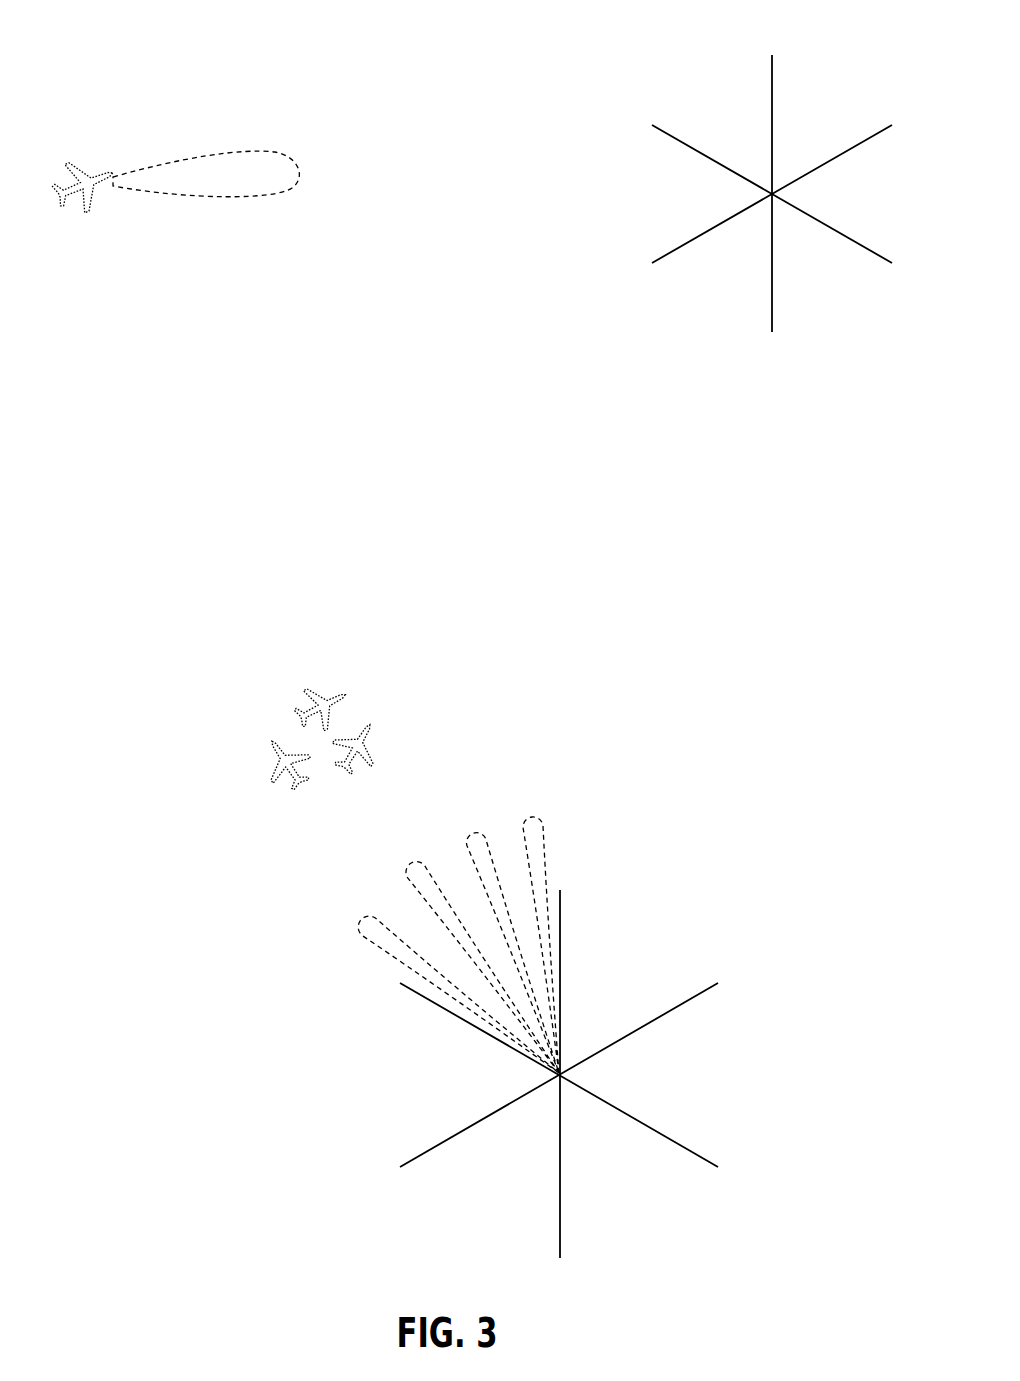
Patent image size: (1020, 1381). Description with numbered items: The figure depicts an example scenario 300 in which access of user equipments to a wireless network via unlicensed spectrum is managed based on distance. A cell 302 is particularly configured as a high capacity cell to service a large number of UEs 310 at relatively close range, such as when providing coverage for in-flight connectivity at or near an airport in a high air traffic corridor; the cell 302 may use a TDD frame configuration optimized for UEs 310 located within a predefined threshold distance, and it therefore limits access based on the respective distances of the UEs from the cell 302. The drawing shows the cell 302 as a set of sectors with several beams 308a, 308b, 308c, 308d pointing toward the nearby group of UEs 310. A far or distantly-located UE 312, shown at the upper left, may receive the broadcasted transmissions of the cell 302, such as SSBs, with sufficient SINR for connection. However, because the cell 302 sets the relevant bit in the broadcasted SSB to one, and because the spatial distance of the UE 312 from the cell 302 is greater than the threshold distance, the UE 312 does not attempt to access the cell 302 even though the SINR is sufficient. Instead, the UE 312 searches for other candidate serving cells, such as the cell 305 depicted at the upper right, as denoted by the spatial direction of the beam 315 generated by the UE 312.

The scenario 300 is at (395, 40).
The cell 302 is at (627, 1238).
The cell 305 is at (793, 335).
The beam 308a is at (382, 960).
The beam 308b is at (407, 883).
The beam 308c is at (492, 852).
The beam 308d is at (543, 838).
The UEs 310 is at (205, 743).
The UE 312 is at (92, 178).
The beam 315 is at (238, 198).